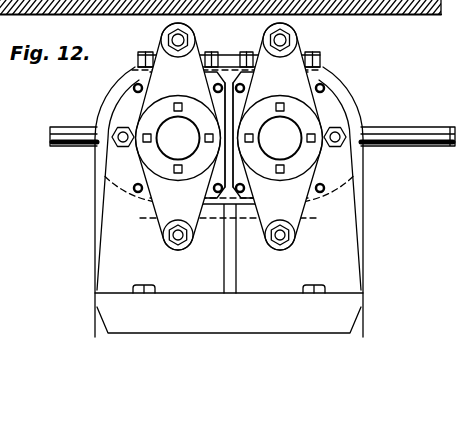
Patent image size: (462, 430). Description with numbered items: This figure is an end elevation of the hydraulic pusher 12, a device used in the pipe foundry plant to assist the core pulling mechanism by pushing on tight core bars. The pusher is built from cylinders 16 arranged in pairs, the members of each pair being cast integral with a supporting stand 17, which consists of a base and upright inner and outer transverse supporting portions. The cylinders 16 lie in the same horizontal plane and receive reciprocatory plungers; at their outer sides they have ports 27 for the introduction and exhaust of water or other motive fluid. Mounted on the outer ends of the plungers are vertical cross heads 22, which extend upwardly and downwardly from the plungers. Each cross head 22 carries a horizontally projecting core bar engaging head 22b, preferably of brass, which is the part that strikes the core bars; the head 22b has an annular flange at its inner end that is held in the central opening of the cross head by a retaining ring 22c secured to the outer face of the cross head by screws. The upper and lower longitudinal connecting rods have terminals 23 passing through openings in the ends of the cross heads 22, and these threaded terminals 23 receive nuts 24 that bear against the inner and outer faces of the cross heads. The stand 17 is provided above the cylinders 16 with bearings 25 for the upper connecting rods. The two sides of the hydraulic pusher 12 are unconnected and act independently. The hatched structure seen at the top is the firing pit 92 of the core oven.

The hydraulic pusher 12 is at (252, 172).
The cylinders 16 is at (125, 97).
The supporting stand 17 is at (229, 309).
The cross heads 22 is at (228, 136).
The core bar engaging heads 22b is at (229, 138).
The retaining rings 22c is at (153, 153).
The terminals of the connecting rods 23 is at (172, 39).
The nuts 24 is at (268, 40).
The bearings 25 is at (248, 62).
The ports 27 is at (75, 133).
The firing pit 92 is at (429, 6).